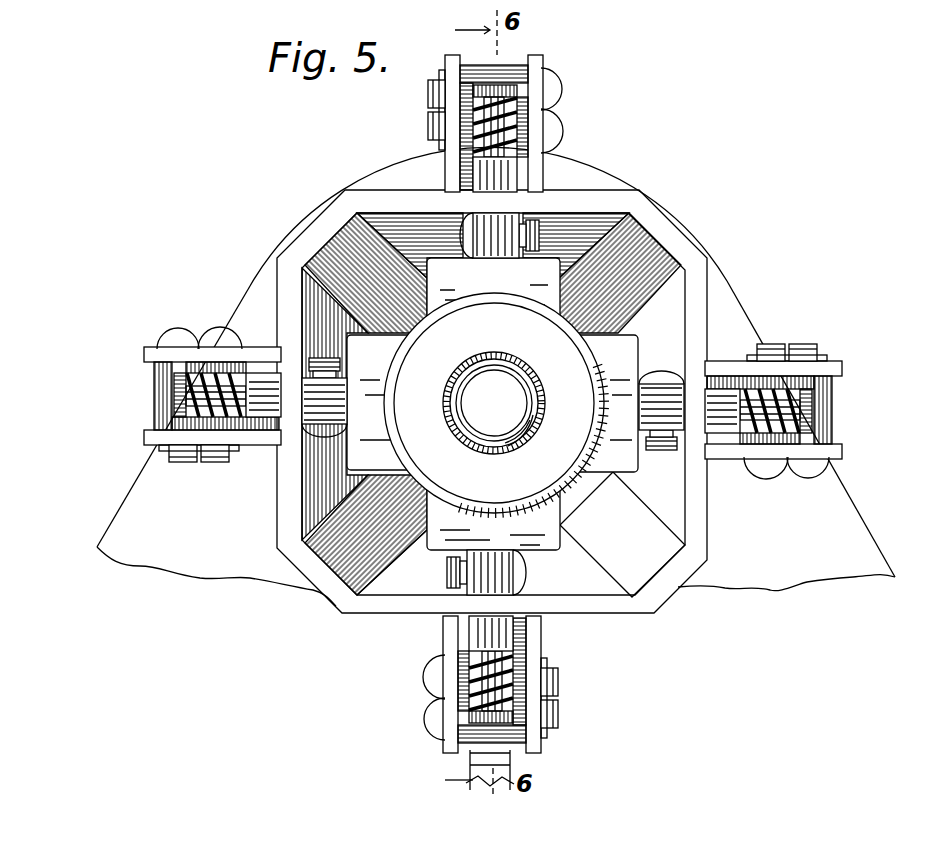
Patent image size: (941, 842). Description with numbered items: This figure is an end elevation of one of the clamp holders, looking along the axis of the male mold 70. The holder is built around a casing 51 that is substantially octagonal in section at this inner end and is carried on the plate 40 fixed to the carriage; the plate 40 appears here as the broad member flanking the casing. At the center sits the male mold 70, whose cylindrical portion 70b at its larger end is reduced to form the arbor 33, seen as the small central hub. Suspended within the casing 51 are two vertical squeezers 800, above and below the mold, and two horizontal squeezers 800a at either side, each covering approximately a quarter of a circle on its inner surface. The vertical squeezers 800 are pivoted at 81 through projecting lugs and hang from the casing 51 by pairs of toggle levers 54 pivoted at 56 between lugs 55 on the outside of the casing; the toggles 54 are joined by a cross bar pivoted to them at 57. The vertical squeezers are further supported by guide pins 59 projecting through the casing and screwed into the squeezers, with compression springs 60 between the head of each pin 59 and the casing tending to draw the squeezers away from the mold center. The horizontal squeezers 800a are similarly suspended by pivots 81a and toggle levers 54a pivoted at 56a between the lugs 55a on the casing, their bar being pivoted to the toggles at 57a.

The plate 40 is at (727, 308).
The casing 51 is at (650, 222).
The toggle levers 54 is at (470, 65).
The toggle levers 54a is at (260, 370).
The lugs 55 is at (545, 82).
The lugs 55a is at (140, 428).
The pivot 56 is at (430, 93).
The pivot 56a is at (183, 460).
The pivot 57 is at (432, 122).
The pivot 57a is at (217, 460).
The guide pins 59 is at (522, 137).
The compression springs 60 is at (523, 113).
The male mold 70 is at (530, 393).
The cylindrical portion 70b is at (423, 467).
The arbor 33 is at (538, 380).
The pivots 81 is at (556, 207).
The pivots 81a is at (332, 358).
The vertical squeezers 800 is at (572, 515).
The horizontal squeezers 800a is at (494, 403).